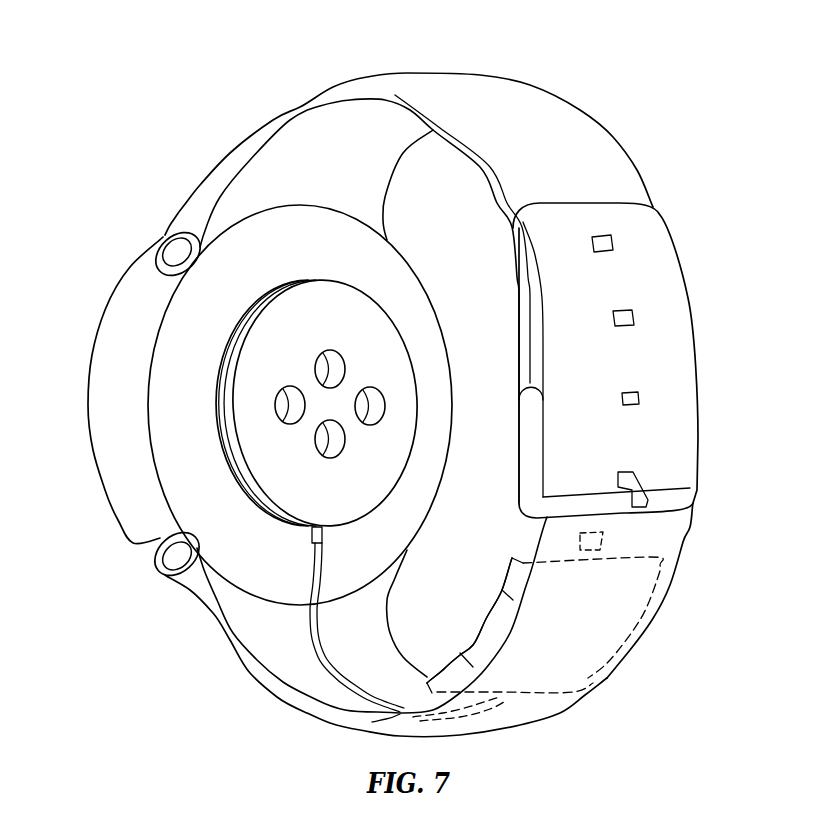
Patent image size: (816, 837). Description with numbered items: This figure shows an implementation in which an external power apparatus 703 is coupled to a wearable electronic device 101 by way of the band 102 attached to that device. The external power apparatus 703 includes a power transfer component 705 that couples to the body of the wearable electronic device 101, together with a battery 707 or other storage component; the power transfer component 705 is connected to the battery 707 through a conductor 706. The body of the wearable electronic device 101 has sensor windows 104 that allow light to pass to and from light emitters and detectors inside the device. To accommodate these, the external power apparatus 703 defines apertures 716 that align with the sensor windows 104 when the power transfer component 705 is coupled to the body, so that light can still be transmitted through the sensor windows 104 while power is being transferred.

The wearable electronic device 101 is at (88, 405).
The band 102 is at (392, 63).
The sensor windows 104 is at (322, 372).
The apertures 716 is at (378, 405).
The power transfer component 705 is at (398, 448).
The conductor 706 is at (312, 657).
The external power apparatus 703 is at (470, 609).
The battery 707 is at (487, 613).